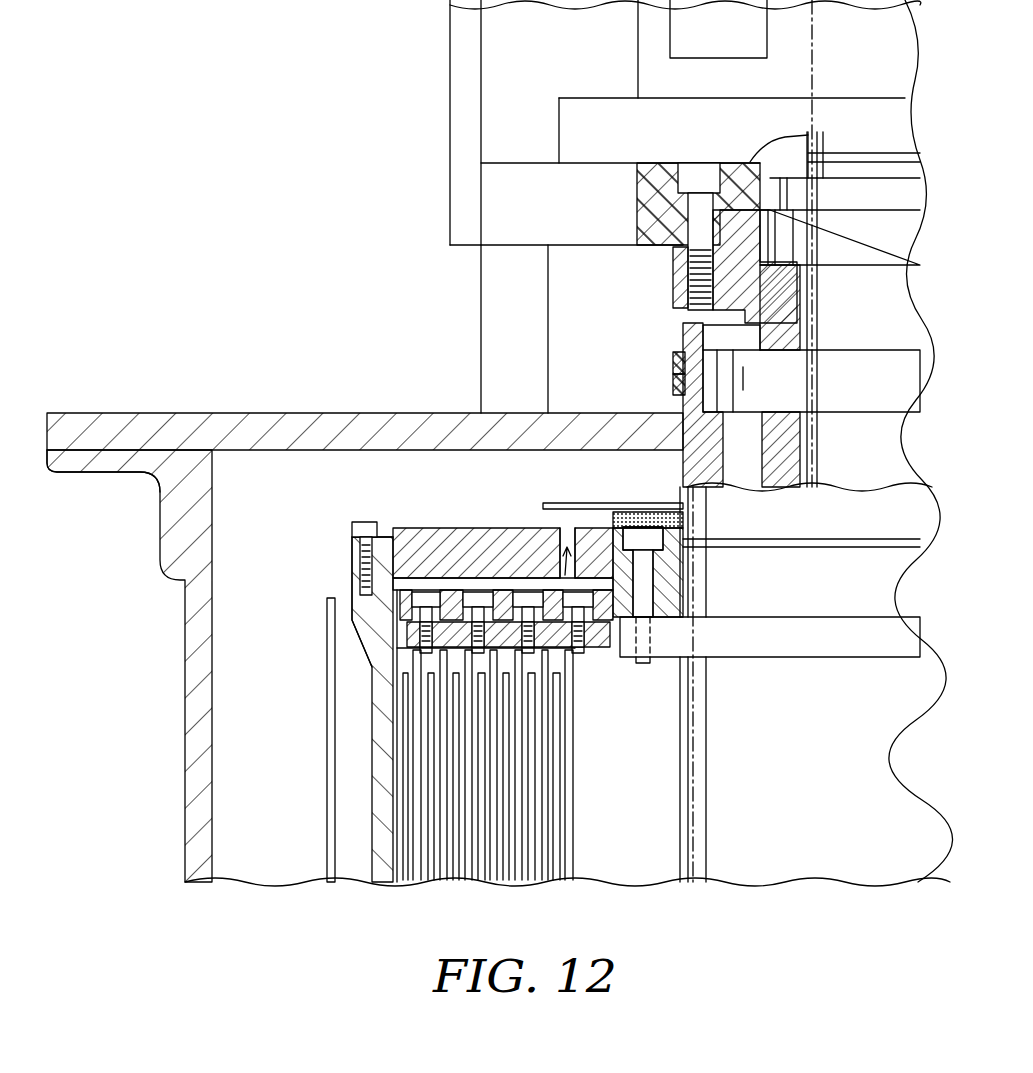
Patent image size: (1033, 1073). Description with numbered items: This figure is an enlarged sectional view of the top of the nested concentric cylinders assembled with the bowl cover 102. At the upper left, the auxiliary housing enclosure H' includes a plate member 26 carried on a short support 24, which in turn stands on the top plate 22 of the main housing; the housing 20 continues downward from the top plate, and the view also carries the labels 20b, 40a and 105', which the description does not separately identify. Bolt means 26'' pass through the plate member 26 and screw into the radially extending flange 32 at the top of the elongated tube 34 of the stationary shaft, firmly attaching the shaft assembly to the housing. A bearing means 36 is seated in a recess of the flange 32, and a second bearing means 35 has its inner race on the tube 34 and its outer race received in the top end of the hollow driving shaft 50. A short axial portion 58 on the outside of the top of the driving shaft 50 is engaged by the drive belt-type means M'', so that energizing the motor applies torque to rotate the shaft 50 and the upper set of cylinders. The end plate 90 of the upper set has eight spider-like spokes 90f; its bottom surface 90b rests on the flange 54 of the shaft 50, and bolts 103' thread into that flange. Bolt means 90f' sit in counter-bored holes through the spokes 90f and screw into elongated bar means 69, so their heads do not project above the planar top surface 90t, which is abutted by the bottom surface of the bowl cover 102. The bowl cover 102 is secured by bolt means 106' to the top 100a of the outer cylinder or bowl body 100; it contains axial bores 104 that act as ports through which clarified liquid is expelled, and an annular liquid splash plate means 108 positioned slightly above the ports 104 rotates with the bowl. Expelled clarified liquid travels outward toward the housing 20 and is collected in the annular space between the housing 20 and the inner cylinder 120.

The auxiliary housing enclosure H' is at (423, 122).
The plate member 26 is at (677, 122).
The bolt means 26'' is at (675, 211).
The flexible member 40a is at (920, 133).
The bearing means 36 is at (876, 256).
The short support 24 is at (481, 300).
The radially extending flange 32 is at (673, 275).
The short axial portion 58 is at (673, 363).
The drive belt means M'' is at (640, 373).
The bearing means 35 is at (861, 396).
The top plate 22 is at (290, 413).
The flange of frame 20b is at (95, 472).
The elongated tube 34 is at (783, 485).
The bowl cover 102 is at (400, 528).
The bolt means 90f' is at (414, 565).
The spokes 90f is at (521, 554).
The liquid splash plate means 108 is at (548, 503).
The axial bores 104 is at (572, 540).
The top surface 90t is at (625, 528).
The bolt means 106' is at (320, 541).
The spacer 105' is at (506, 556).
The top of bowl body 100a is at (352, 568).
The bolts 103' is at (589, 571).
The end plate 90 is at (672, 595).
The elongated bar means 69 is at (410, 646).
The bottom surface 90b is at (617, 663).
The flange 54 is at (765, 640).
The housing 20 is at (185, 735).
The inner cylinder 120 is at (327, 755).
The bowl body 100 is at (372, 800).
The hollow driving shaft means 50 is at (668, 799).